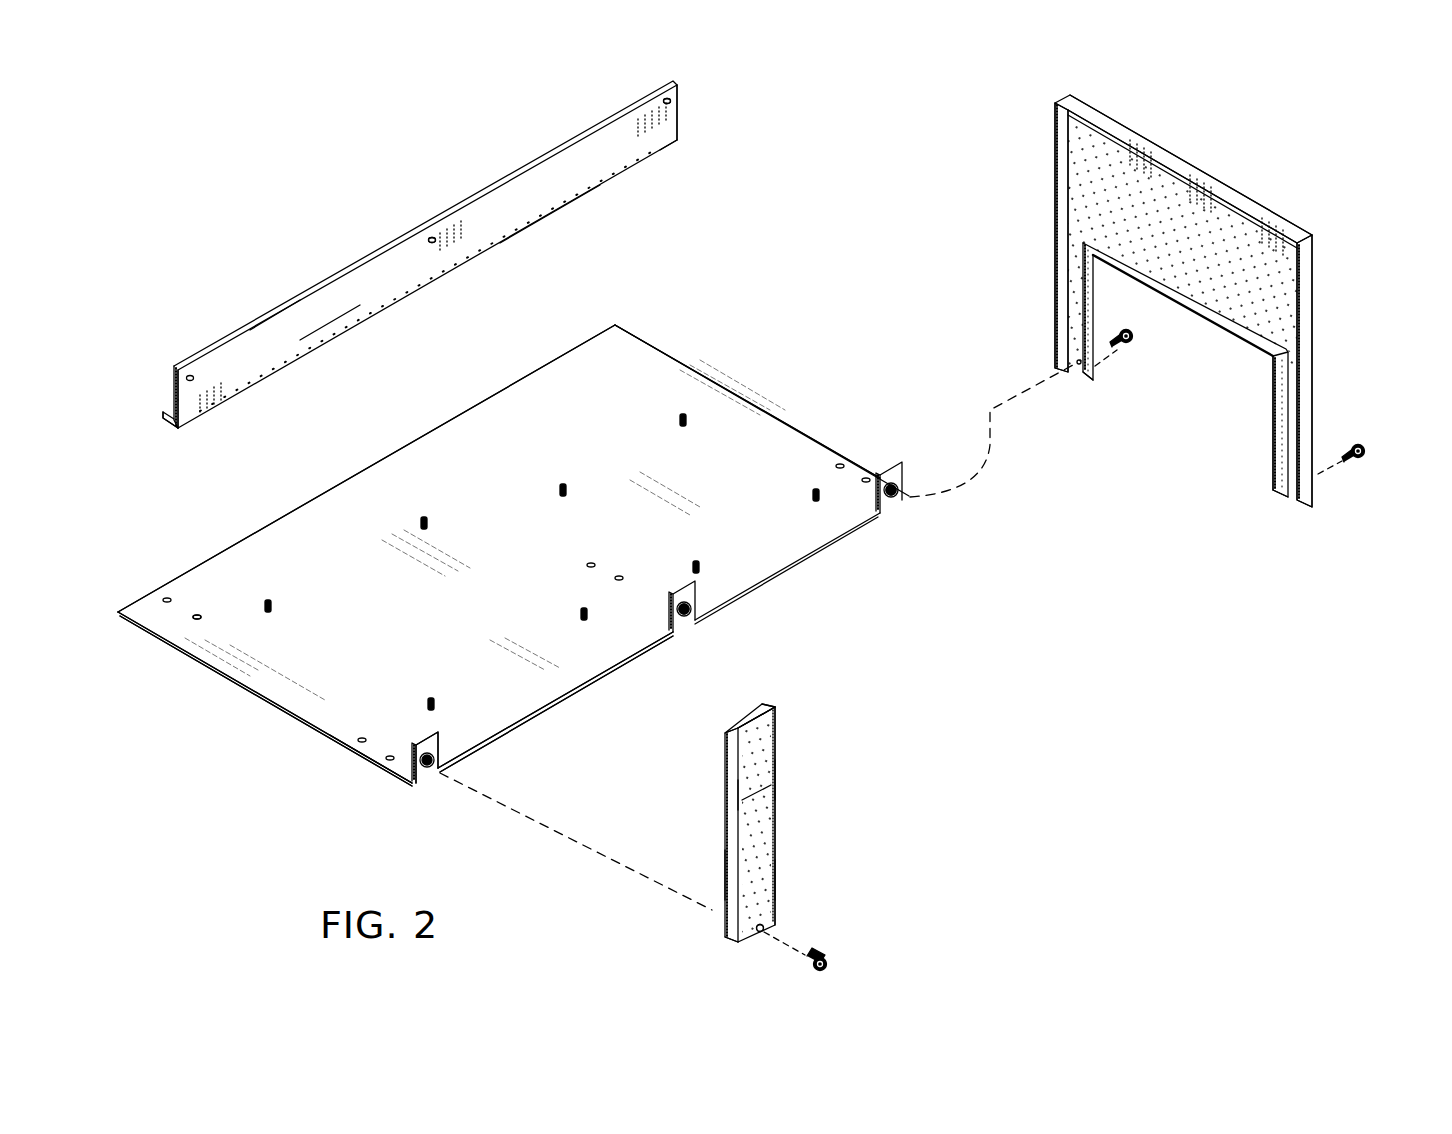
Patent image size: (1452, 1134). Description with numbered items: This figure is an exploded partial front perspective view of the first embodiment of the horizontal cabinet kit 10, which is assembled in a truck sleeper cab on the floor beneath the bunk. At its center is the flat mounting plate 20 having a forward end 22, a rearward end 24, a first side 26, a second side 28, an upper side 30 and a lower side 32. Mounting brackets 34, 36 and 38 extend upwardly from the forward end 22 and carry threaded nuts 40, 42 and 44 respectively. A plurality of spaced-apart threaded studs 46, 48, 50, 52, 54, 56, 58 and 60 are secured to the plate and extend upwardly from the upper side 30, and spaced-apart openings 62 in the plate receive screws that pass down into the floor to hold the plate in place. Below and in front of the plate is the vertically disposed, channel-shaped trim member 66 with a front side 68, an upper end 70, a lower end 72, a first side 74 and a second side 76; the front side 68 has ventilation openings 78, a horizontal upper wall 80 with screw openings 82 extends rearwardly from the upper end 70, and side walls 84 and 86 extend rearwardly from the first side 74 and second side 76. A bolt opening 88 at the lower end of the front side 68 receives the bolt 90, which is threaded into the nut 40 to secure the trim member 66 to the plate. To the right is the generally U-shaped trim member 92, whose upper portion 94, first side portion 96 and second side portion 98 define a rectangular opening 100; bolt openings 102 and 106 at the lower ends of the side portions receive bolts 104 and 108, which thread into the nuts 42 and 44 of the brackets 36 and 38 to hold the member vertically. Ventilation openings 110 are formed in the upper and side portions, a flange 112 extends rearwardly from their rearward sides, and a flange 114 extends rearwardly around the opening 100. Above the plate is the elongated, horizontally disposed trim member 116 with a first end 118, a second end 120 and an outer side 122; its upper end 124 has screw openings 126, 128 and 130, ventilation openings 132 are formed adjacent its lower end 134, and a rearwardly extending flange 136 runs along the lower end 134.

The horizontal cabinet kit 10 is at (847, 250).
The mounting plate 20 is at (782, 414).
The forward end 22 is at (650, 648).
The rearward end 24 is at (458, 416).
The first side 26 is at (268, 699).
The second side 28 is at (727, 389).
The upper side 30 is at (706, 494).
The lower side 32 is at (365, 772).
The mounting bracket 34 is at (419, 783).
The mounting bracket 36 is at (695, 596).
The mounting bracket 38 is at (896, 503).
The threaded nut 40 is at (432, 768).
The threaded nut 42 is at (688, 614).
The threaded nut 44 is at (898, 494).
The threaded stud 46 is at (428, 704).
The threaded stud 48 is at (268, 600).
The threaded stud 50 is at (584, 621).
The threaded stud 52 is at (424, 517).
The threaded stud 54 is at (700, 567).
The threaded stud 56 is at (563, 484).
The threaded stud 58 is at (816, 489).
The threaded stud 60 is at (683, 414).
The openings 62 is at (197, 614).
The trim member 66 is at (790, 845).
The front side 68 is at (776, 775).
The upper end 70 is at (776, 727).
The lower end 72 is at (745, 942).
The first side 74 is at (726, 880).
The second side 76 is at (776, 880).
The ventilation openings 78 is at (766, 815).
The upper wall 80 is at (730, 726).
The screw openings 82 is at (763, 712).
The side wall 84 is at (735, 793).
The side wall 86 is at (777, 710).
The bolt opening 88 is at (764, 929).
The bolt 90 is at (829, 958).
The U-shaped trim member 92 is at (1240, 158).
The upper portion 94 is at (1238, 240).
The first side portion 96 is at (1302, 405).
The second side portion 98 is at (1060, 268).
The rectangular opening 100 is at (1206, 378).
The bolt opening 102 is at (1292, 480).
The bolt 104 is at (1360, 462).
The bolt opening 106 is at (1078, 372).
The bolt 108 is at (1128, 348).
The ventilation openings 110 is at (1266, 298).
The flange 112 is at (1157, 146).
The flange 114 is at (1285, 430).
The trim member 116 is at (515, 174).
The first end 118 is at (170, 400).
The second end 120 is at (683, 124).
The outer side 122 is at (332, 305).
The upper end 124 is at (272, 314).
The screw opening 126 is at (193, 365).
The screw opening 128 is at (430, 240).
The screw opening 130 is at (670, 100).
The ventilation openings 132 is at (665, 147).
The lower end 134 is at (557, 212).
The flange 136 is at (165, 420).